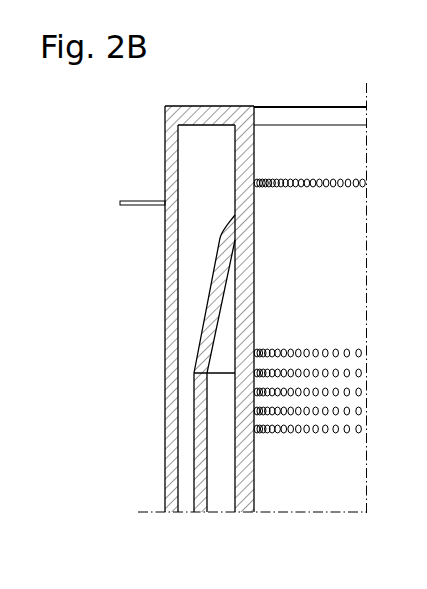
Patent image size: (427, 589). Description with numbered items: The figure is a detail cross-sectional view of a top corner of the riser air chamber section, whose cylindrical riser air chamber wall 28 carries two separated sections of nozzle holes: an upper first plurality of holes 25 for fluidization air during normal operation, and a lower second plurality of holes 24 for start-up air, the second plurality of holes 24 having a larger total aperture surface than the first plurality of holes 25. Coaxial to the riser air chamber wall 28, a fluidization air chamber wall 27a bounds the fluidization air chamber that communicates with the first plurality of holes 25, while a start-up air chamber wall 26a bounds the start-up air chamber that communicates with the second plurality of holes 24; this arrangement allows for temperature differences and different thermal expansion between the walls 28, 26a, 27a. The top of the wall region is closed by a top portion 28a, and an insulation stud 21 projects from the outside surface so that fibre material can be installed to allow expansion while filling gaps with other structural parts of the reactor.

The top wall of housing 28a is at (206, 113).
The fluidization air chamber wall 27a is at (170, 490).
The riser air chamber wall 28 is at (247, 500).
The start-up air chamber wall 26a is at (199, 500).
The insulation stud 21 is at (134, 203).
The first plurality of holes 25 is at (366, 183).
The second plurality of holes 24 is at (363, 373).